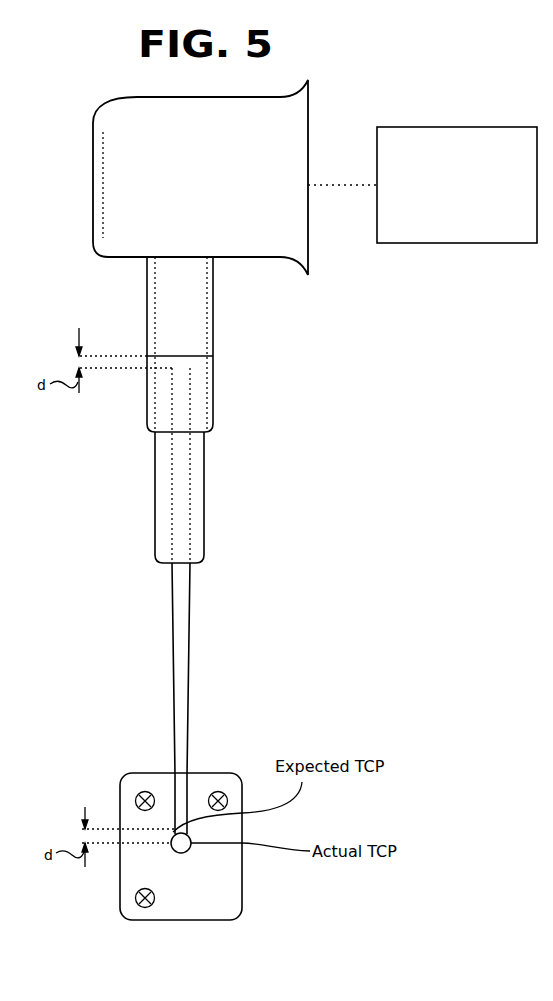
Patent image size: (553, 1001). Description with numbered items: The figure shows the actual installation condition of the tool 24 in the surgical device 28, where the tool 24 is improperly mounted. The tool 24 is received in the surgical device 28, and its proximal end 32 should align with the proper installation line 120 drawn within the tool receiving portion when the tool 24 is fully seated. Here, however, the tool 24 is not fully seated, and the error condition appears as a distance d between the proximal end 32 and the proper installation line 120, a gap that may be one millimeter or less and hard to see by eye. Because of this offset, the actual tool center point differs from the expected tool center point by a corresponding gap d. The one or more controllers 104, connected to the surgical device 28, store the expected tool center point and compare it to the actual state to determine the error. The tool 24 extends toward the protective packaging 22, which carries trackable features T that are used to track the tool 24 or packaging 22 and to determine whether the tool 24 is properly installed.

The surgical device 28 is at (308, 120).
The controllers 104 is at (520, 157).
The proper installation line 120 is at (200, 348).
The proximal end 32 is at (188, 371).
The tool 24 is at (182, 668).
The protective packaging 22 is at (229, 906).
The trackable features T is at (216, 792).